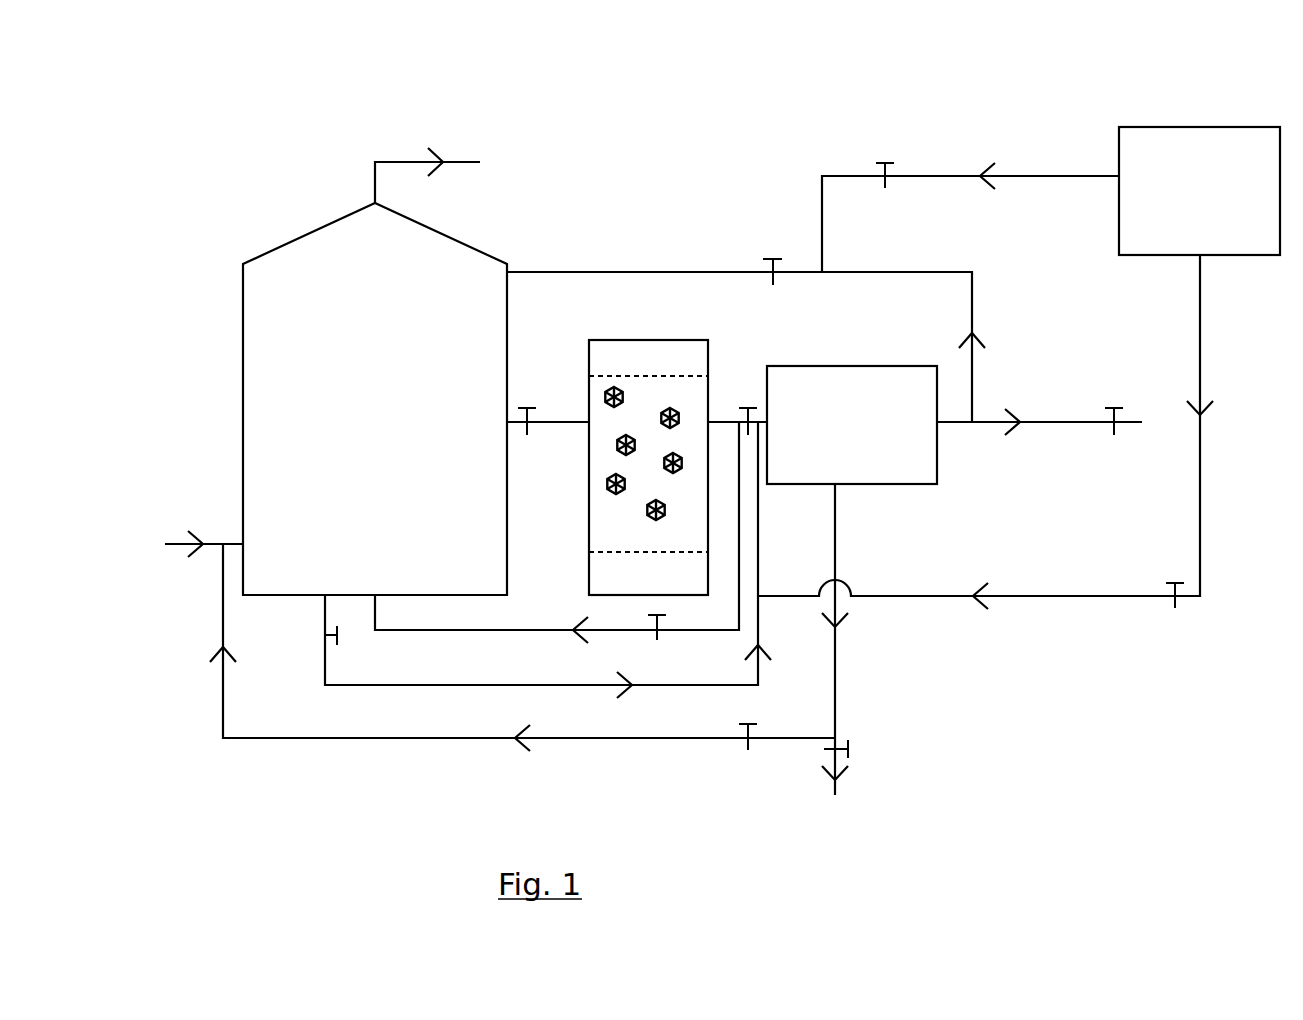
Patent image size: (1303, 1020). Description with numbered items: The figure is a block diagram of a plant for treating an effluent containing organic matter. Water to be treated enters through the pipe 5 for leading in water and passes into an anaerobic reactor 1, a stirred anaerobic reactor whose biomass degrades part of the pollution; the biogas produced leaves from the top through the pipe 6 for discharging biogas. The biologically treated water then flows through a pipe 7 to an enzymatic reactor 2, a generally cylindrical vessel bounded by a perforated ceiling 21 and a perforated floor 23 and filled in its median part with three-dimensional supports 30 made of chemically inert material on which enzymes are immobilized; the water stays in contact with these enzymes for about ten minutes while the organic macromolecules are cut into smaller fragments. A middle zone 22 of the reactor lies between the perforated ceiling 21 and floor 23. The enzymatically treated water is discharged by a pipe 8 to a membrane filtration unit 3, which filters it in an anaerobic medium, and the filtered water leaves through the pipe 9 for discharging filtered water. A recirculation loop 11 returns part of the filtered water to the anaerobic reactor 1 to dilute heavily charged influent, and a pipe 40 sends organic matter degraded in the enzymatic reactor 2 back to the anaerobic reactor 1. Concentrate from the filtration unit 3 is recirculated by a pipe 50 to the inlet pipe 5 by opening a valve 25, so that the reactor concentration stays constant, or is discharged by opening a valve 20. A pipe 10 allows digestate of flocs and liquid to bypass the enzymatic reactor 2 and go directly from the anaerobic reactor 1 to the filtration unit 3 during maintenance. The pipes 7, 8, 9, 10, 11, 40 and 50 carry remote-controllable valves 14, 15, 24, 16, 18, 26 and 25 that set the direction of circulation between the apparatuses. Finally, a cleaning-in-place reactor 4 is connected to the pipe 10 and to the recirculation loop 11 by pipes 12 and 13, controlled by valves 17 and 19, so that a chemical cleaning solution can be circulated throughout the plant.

The anaerobic reactor 1 is at (240, 348).
The enzymatic reactor 2 is at (660, 340).
The membrane filtration unit 3 is at (835, 366).
The cleaning-in-place reactor 4 is at (1220, 127).
The pipe for leading in water 5 is at (180, 545).
The pipe for discharging biogas 6 is at (466, 162).
The pipe 7 is at (572, 424).
The pipe 8 is at (718, 420).
The pipe for discharging filtered water 9 is at (1075, 424).
The pipe 10 is at (708, 687).
The recirculation loop 11 is at (885, 271).
The pipe 12 is at (1108, 598).
The pipe 13 is at (1012, 175).
The remote-controllable valve 14 is at (520, 407).
The remote-controllable valve 15 is at (745, 407).
The remote-controllable valve 16 is at (318, 636).
The valve 17 is at (1170, 581).
The remote-controllable valve 18 is at (768, 257).
The valve 19 is at (880, 161).
The valve 20 is at (855, 748).
The ceiling 21 is at (597, 360).
The middle zone 22 is at (600, 535).
The floor 23 is at (600, 578).
The remote-controllable valve 24 is at (1108, 407).
The valve 25 is at (745, 740).
The remote-controllable valve 26 is at (658, 640).
The three-dimensional supports 30 is at (661, 513).
The pipe 40 is at (480, 631).
The pipe 50 is at (408, 738).